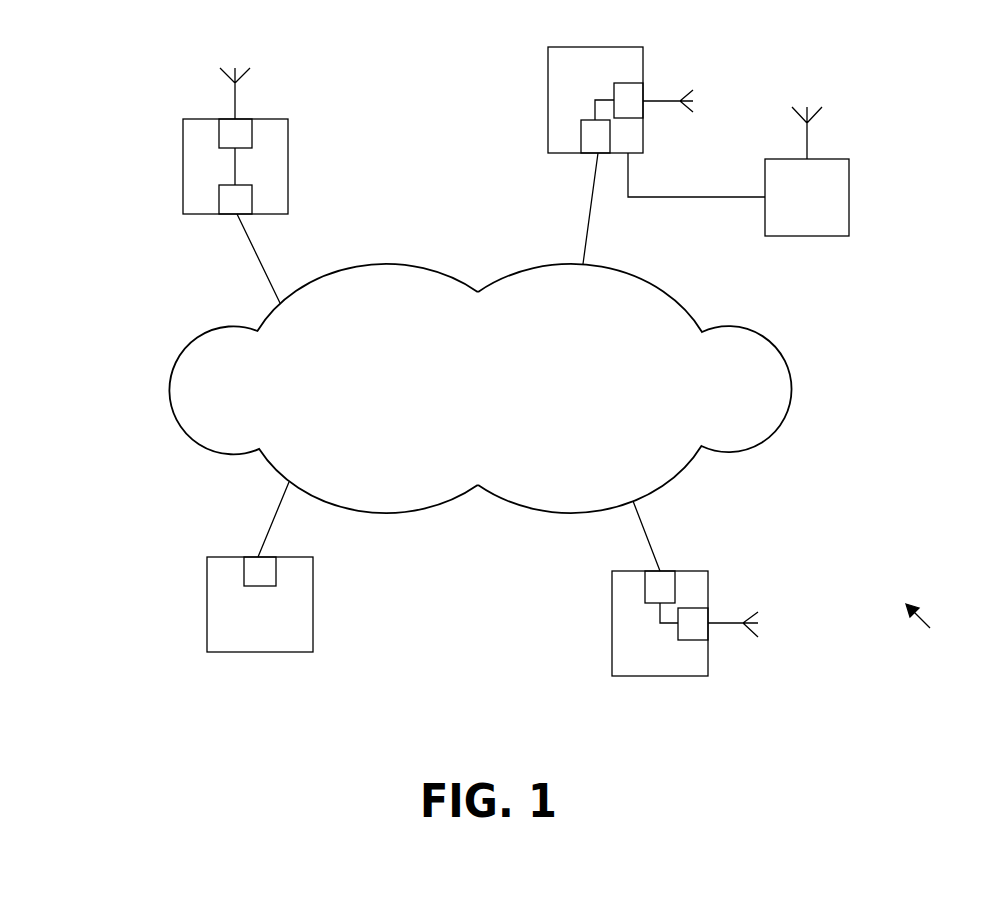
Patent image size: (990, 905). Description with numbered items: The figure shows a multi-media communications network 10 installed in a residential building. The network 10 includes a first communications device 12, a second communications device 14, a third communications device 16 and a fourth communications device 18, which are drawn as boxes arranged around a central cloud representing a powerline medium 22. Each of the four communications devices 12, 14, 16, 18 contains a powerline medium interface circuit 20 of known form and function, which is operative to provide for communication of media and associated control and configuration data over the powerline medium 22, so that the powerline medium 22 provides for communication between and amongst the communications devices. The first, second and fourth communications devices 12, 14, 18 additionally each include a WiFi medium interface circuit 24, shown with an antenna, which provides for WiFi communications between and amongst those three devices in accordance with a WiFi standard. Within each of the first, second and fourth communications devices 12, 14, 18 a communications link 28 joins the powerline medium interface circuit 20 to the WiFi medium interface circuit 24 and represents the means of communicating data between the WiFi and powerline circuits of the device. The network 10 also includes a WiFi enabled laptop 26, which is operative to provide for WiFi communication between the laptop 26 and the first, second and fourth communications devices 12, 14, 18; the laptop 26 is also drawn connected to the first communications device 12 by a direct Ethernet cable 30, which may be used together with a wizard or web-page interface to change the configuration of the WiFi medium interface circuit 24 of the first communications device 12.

The multi-media communications network 10 is at (935, 629).
The first communications device 12 is at (548, 72).
The second communications device 14 is at (183, 165).
The third communications device 16 is at (313, 607).
The fourth communications device 18 is at (708, 573).
The powerline medium interface circuit 20 is at (227, 210).
The powerline medium 22 is at (467, 400).
The WiFi medium interface circuit 24 is at (245, 127).
The WiFi enabled laptop 26 is at (849, 197).
The communications link 28 is at (237, 167).
The direct Ethernet cable 30 is at (712, 200).